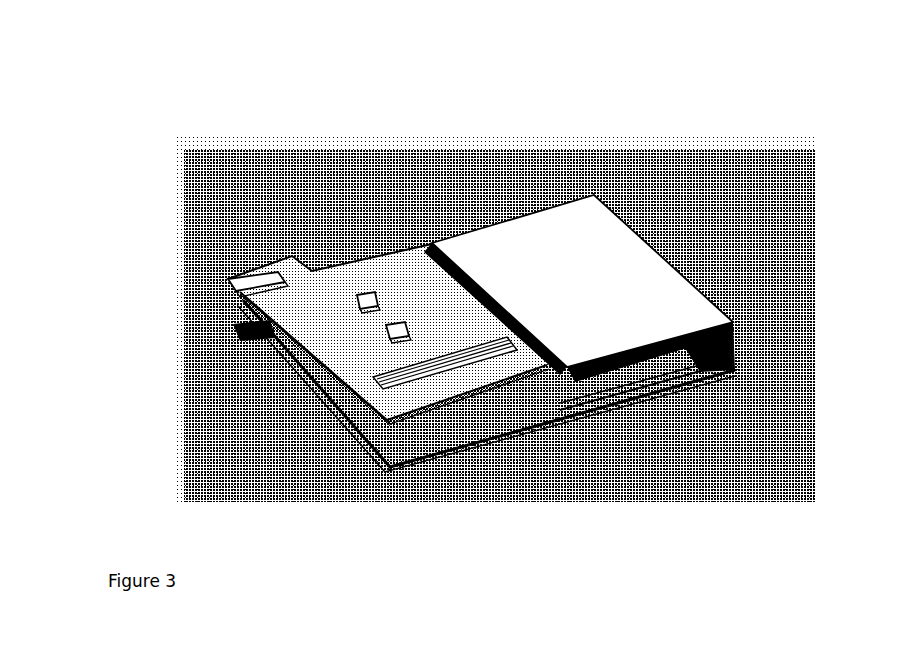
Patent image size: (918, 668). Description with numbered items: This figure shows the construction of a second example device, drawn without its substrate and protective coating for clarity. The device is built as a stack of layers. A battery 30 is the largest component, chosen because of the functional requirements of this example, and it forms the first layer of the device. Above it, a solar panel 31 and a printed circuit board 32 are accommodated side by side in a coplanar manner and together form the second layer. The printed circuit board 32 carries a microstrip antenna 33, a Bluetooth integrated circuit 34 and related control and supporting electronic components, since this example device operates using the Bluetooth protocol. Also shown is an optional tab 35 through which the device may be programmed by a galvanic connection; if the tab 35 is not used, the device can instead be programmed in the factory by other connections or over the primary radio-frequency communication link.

The battery 30 is at (393, 468).
The solar panel 31 is at (620, 257).
The printed circuit board 32 is at (285, 311).
The microstrip antenna 33 is at (417, 367).
The Bluetooth integrated circuit 34 is at (393, 333).
The tab 35 is at (288, 258).